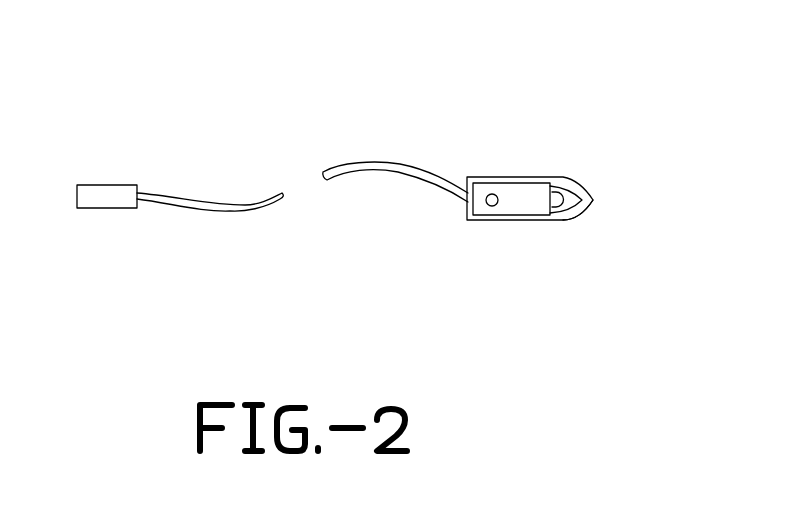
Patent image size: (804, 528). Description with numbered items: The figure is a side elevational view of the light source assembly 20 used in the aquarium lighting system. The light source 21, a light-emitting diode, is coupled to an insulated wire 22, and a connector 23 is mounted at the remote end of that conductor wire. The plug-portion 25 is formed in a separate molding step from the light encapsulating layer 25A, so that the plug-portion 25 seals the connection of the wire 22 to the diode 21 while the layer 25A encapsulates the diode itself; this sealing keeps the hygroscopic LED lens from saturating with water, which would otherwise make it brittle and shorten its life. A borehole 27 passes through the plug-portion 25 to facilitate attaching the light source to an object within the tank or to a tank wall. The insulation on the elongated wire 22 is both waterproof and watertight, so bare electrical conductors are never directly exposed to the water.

The fishing lure assembly 20 is at (310, 90).
The light source 21 is at (584, 198).
The insulated wire 22 is at (350, 175).
The connector 23 is at (102, 195).
The plug-portion 25 is at (567, 187).
The light encapsulating layer 25A is at (572, 220).
The borehole 27 is at (493, 206).